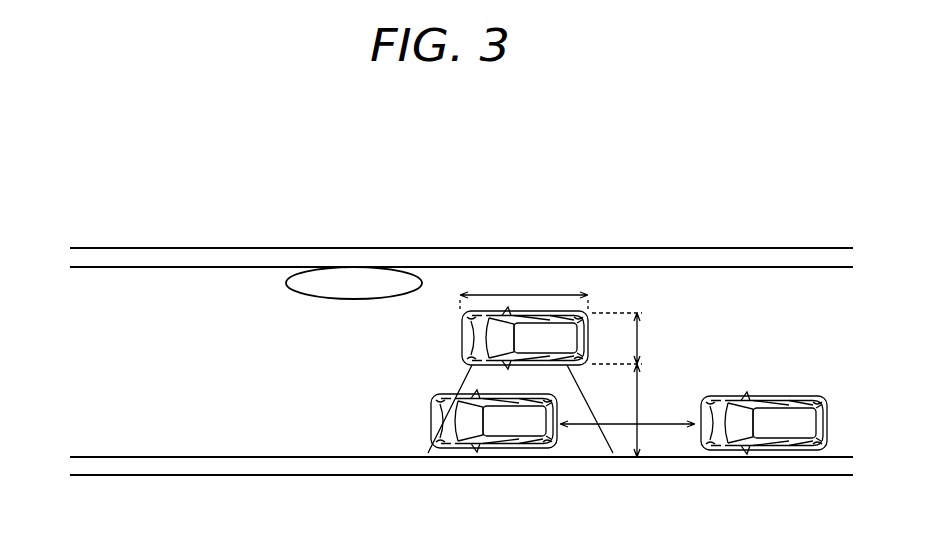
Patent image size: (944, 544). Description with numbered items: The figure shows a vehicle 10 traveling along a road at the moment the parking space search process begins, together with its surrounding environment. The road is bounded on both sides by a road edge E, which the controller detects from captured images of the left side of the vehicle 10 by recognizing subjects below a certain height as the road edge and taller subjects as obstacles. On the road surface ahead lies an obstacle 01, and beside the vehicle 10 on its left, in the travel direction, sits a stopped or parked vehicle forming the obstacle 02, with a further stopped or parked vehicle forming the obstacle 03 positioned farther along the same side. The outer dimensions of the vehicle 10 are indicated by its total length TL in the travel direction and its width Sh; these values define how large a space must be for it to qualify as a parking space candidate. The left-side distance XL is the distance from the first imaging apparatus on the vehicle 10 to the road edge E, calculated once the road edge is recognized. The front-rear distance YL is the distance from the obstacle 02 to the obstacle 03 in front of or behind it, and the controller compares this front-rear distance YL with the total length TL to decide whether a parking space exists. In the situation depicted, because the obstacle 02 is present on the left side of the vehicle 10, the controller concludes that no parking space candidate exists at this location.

The road edge E is at (157, 258).
The obstacle 01 is at (348, 283).
The vehicle 10 is at (464, 337).
The obstacle 02 is at (434, 426).
The obstacle 03 is at (778, 410).
The total length TL is at (524, 292).
The vehicle width Sh is at (630, 338).
The left-side distance XL is at (648, 410).
The front-rear distance YL is at (627, 434).